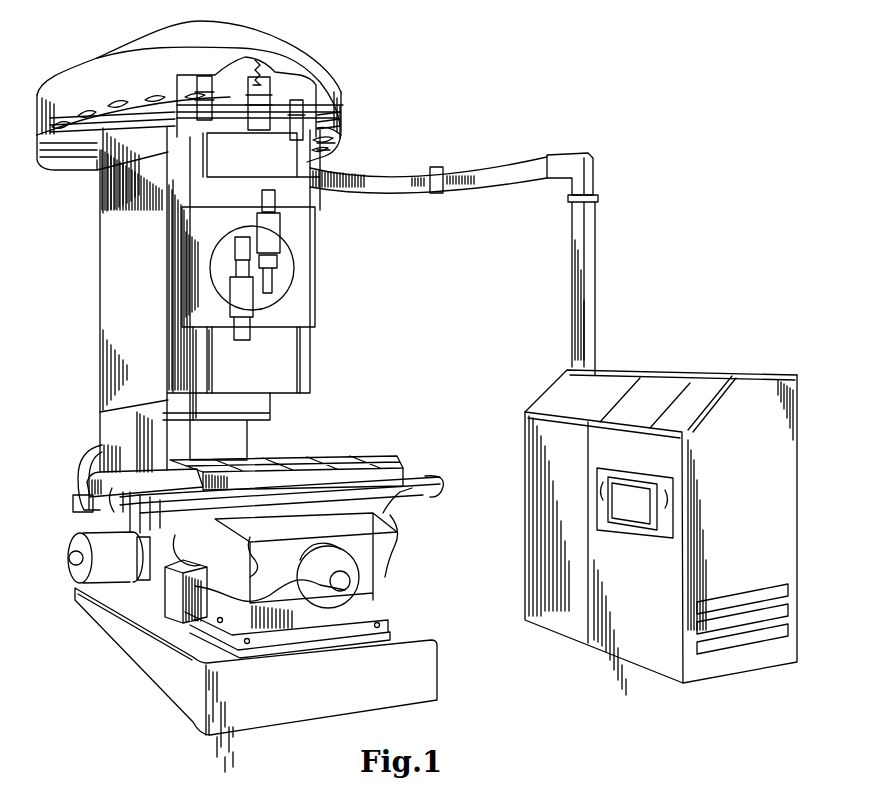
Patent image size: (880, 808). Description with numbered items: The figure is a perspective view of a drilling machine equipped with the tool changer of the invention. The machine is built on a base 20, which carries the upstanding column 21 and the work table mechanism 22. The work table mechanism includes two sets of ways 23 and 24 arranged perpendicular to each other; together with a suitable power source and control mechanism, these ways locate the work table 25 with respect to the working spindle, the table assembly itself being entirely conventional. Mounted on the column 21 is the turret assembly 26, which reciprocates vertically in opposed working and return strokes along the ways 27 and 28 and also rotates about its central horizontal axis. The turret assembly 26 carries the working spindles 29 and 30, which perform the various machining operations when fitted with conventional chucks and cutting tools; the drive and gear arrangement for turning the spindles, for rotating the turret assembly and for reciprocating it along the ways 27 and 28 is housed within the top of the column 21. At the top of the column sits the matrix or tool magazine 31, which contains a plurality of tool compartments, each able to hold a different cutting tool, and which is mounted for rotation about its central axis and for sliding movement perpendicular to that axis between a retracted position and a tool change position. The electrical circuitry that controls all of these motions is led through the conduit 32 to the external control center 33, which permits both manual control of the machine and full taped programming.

The base 20 is at (441, 691).
The column 21 is at (98, 349).
The work table mechanism 22 is at (401, 551).
The set of ways 23 is at (418, 489).
The set of ways 24 is at (233, 542).
The work table 25 is at (341, 456).
The turret assembly 26 is at (318, 269).
The way 27 is at (306, 359).
The way 28 is at (211, 359).
The working spindle 29 is at (276, 322).
The working spindle 30 is at (276, 213).
The tool magazine 31 is at (296, 49).
The conduit 32 is at (477, 166).
The control center 33 is at (700, 374).